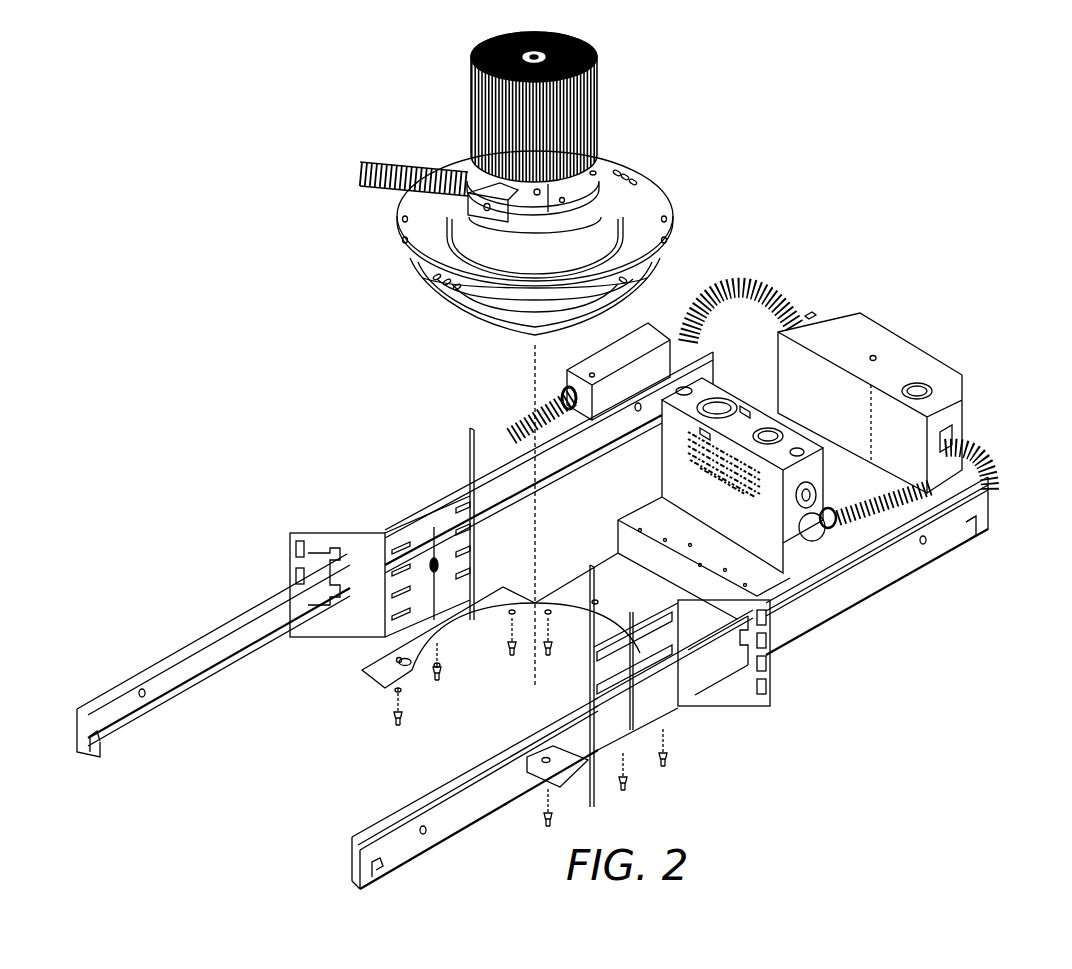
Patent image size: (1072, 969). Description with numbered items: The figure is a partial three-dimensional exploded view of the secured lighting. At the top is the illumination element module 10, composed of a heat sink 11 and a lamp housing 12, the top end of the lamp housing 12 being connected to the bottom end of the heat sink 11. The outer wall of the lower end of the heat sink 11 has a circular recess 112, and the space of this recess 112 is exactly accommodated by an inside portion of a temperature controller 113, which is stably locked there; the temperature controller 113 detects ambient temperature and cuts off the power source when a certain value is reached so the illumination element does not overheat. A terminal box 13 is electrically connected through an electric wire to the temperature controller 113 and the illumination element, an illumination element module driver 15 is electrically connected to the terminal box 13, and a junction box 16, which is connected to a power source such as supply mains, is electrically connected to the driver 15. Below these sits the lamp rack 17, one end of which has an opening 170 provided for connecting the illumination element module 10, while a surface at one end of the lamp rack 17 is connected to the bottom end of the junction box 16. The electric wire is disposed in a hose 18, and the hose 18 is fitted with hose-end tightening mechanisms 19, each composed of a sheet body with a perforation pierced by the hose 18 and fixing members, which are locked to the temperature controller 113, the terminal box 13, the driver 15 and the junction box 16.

The illumination element module 10 is at (700, 156).
The heat sink 11 is at (598, 163).
The circular recess 112 is at (578, 187).
The lamp housing 12 is at (594, 243).
The temperature controller 113 is at (483, 198).
The terminal box 13 is at (612, 352).
The illumination element module driver 15 is at (892, 345).
The junction box 16 is at (767, 540).
The lamp rack 17 is at (873, 572).
The opening 170 is at (453, 717).
The hose 18 is at (390, 178).
The hose-end tightening mechanism 19 is at (980, 421).